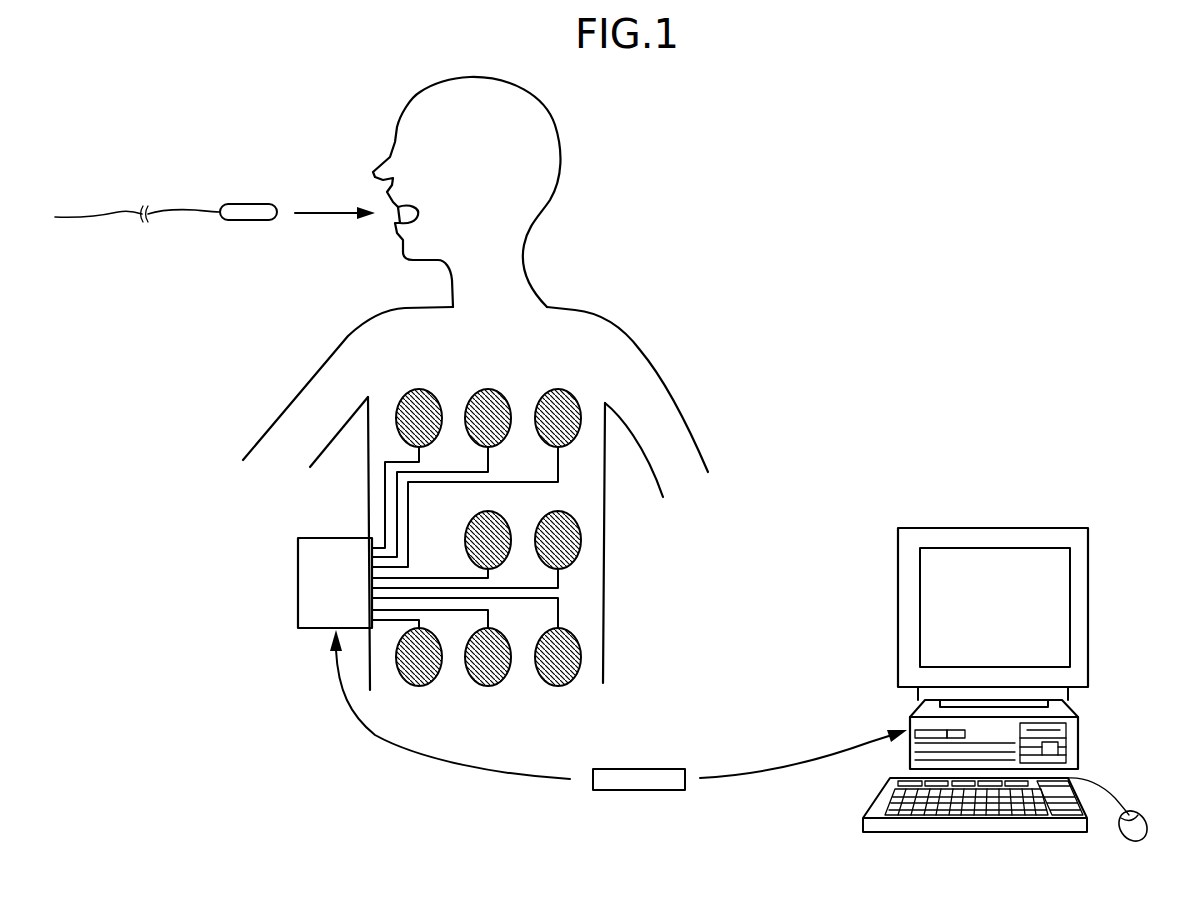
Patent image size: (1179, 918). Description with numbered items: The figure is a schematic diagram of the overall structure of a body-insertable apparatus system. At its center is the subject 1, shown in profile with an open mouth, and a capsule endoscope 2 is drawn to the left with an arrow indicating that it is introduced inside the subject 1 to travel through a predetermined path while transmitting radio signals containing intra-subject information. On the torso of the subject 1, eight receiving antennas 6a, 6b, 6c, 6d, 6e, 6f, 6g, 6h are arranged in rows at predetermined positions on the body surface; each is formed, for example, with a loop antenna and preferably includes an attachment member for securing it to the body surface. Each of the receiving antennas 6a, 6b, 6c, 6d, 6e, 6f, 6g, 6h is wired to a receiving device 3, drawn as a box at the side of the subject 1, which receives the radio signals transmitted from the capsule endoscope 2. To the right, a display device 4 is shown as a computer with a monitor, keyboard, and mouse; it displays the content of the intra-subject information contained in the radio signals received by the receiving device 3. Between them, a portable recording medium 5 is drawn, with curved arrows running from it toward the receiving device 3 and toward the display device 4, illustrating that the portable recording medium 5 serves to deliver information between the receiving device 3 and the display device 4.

The subject 1 is at (580, 110).
The capsule endoscope 2 is at (248, 205).
The receiving device 3 is at (298, 545).
The display device 4 is at (945, 528).
The portable recording medium 5 is at (635, 790).
The receiving antenna 6a is at (396, 412).
The receiving antenna 6b is at (488, 389).
The receiving antenna 6c is at (558, 389).
The receiving antenna 6d is at (490, 511).
The receiving antenna 6e is at (560, 511).
The receiving antenna 6f is at (419, 686).
The receiving antenna 6g is at (488, 686).
The receiving antenna 6h is at (558, 686).